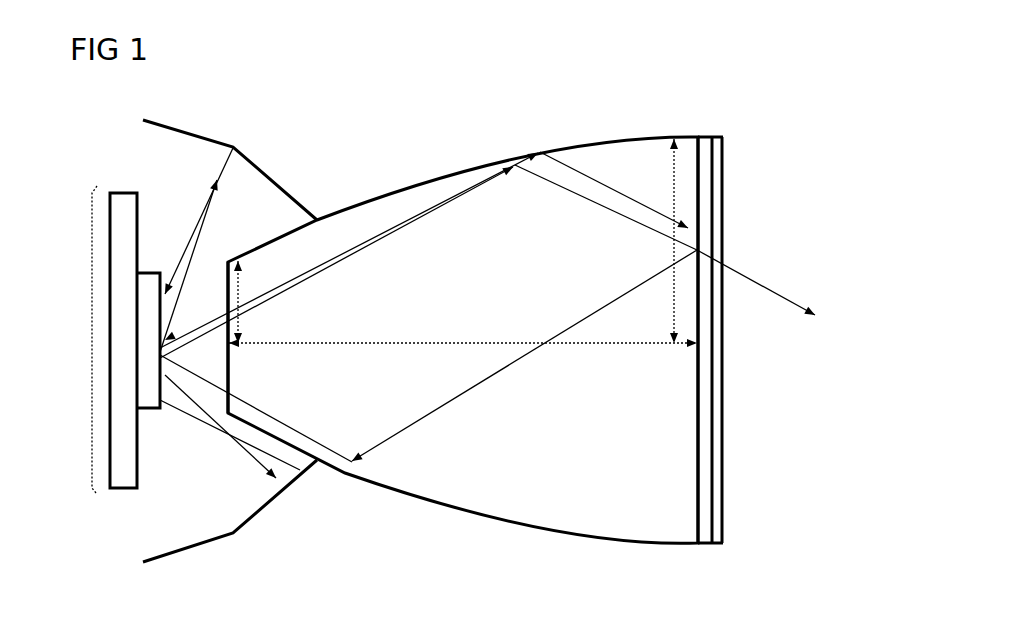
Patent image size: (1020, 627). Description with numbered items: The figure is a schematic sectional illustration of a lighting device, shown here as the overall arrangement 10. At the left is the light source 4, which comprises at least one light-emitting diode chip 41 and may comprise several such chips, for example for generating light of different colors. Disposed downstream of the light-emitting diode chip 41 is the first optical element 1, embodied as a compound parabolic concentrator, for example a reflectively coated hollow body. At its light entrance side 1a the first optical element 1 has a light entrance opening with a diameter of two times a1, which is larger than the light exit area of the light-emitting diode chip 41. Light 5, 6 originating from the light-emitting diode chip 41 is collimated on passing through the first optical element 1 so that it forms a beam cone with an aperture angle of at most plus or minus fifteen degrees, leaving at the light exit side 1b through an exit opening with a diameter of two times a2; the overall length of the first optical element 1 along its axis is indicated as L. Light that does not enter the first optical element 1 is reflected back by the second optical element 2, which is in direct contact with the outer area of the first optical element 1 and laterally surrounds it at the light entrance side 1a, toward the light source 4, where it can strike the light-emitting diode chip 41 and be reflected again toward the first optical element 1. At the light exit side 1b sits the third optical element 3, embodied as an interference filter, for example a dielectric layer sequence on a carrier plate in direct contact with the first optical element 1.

The first optical element 1 is at (578, 138).
The light entrance side 1a is at (215, 295).
The light exit side 1b is at (702, 380).
The second optical element 2 is at (262, 165).
The third optical element 3 is at (712, 137).
The light source 4 is at (92, 346).
The light-emitting diode chip 41 is at (157, 273).
The light 5 is at (413, 210).
The light 6 is at (460, 200).
The optical device 10 is at (647, 118).
The half-diameter of light entrance opening a1 is at (240, 298).
The half-diameter of light exit opening a2 is at (673, 262).
The lens length L is at (622, 345).